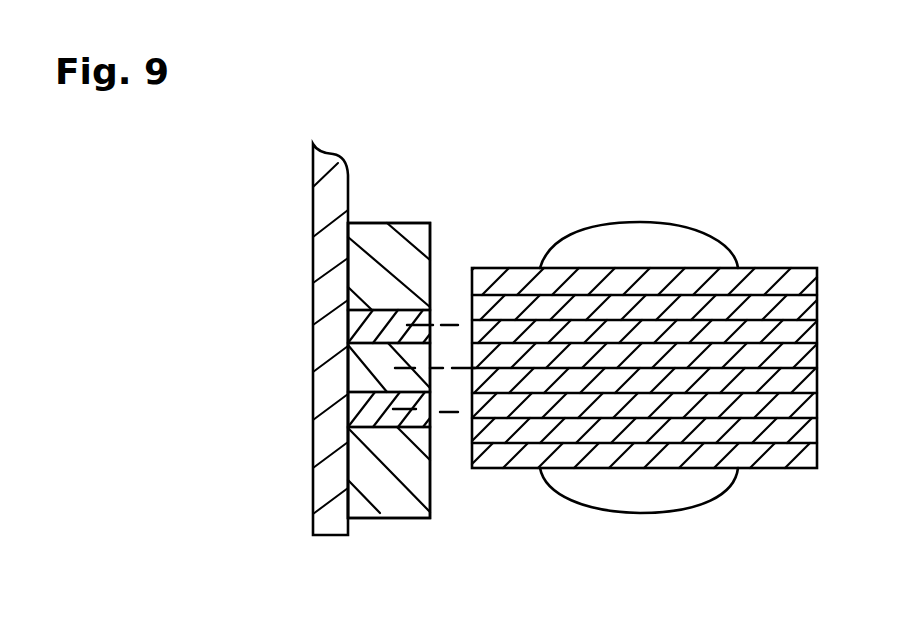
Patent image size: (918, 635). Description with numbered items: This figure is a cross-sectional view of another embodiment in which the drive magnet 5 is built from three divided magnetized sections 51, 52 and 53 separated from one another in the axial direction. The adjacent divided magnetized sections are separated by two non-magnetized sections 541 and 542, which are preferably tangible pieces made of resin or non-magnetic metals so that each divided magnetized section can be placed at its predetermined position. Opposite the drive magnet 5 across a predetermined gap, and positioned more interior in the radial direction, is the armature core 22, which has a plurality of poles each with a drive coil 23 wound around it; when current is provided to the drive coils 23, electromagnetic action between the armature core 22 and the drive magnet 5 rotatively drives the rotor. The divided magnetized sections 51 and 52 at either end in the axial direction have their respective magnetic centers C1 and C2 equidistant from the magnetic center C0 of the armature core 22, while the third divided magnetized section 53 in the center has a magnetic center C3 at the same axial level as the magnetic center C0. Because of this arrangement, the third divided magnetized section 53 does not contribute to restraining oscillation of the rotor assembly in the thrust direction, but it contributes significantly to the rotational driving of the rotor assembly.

The drive magnet 5 is at (157, 259).
The divided magnetized section 51 is at (370, 280).
The non-magnetized section 541 is at (400, 325).
The third divided magnetized section 53 is at (372, 382).
The non-magnetized section 542 is at (367, 407).
The divided magnetized section 52 is at (372, 474).
The armature core 22 is at (770, 284).
The drive coil 23 is at (620, 248).
The magnetic center of the armature core C0 is at (476, 356).
The magnetic center of divided magnetized section 51 C1 is at (452, 323).
The magnetic center of divided magnetized section 52 C2 is at (442, 413).
The magnetic center of the third divided magnetized section C3 is at (412, 368).